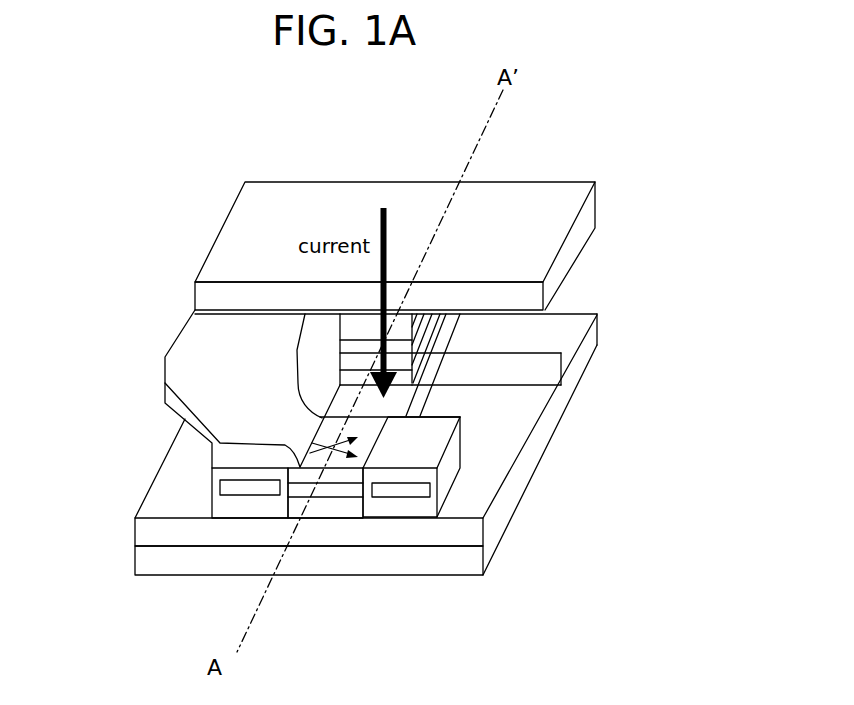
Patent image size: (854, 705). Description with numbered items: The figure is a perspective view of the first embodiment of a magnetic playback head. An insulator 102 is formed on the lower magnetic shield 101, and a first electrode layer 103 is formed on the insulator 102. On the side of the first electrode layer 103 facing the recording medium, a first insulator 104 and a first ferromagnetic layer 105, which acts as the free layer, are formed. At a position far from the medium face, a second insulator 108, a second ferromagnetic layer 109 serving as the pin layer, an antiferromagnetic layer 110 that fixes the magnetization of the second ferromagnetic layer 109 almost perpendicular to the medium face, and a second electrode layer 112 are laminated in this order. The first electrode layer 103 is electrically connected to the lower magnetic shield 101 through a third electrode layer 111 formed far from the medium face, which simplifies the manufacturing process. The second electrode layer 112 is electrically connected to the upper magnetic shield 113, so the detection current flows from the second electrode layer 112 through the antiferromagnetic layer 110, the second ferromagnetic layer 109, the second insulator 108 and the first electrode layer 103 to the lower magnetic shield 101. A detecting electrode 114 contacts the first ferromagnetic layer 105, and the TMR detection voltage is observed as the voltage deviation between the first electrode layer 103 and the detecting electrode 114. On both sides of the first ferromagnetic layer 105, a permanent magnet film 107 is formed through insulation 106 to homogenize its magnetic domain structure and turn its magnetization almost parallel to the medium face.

The lower magnetic shield 101 is at (373, 563).
The insulator 102 is at (386, 535).
The first electrode layer 103 is at (340, 508).
The first insulator 104 is at (288, 500).
The first ferromagnetic layer (free layer) 105 is at (292, 446).
The insulation 106 is at (455, 470).
The permanent magnet film 107 is at (235, 486).
The second insulator 108 is at (408, 375).
The second ferromagnetic layer (pin layer) 109 is at (403, 358).
The antiferromagnetic layer 110 is at (402, 349).
The third electrode layer 111 is at (465, 323).
The second electrode layer 112 is at (353, 324).
The upper magnetic shield 113 is at (243, 255).
The detecting electrode 114 is at (210, 377).